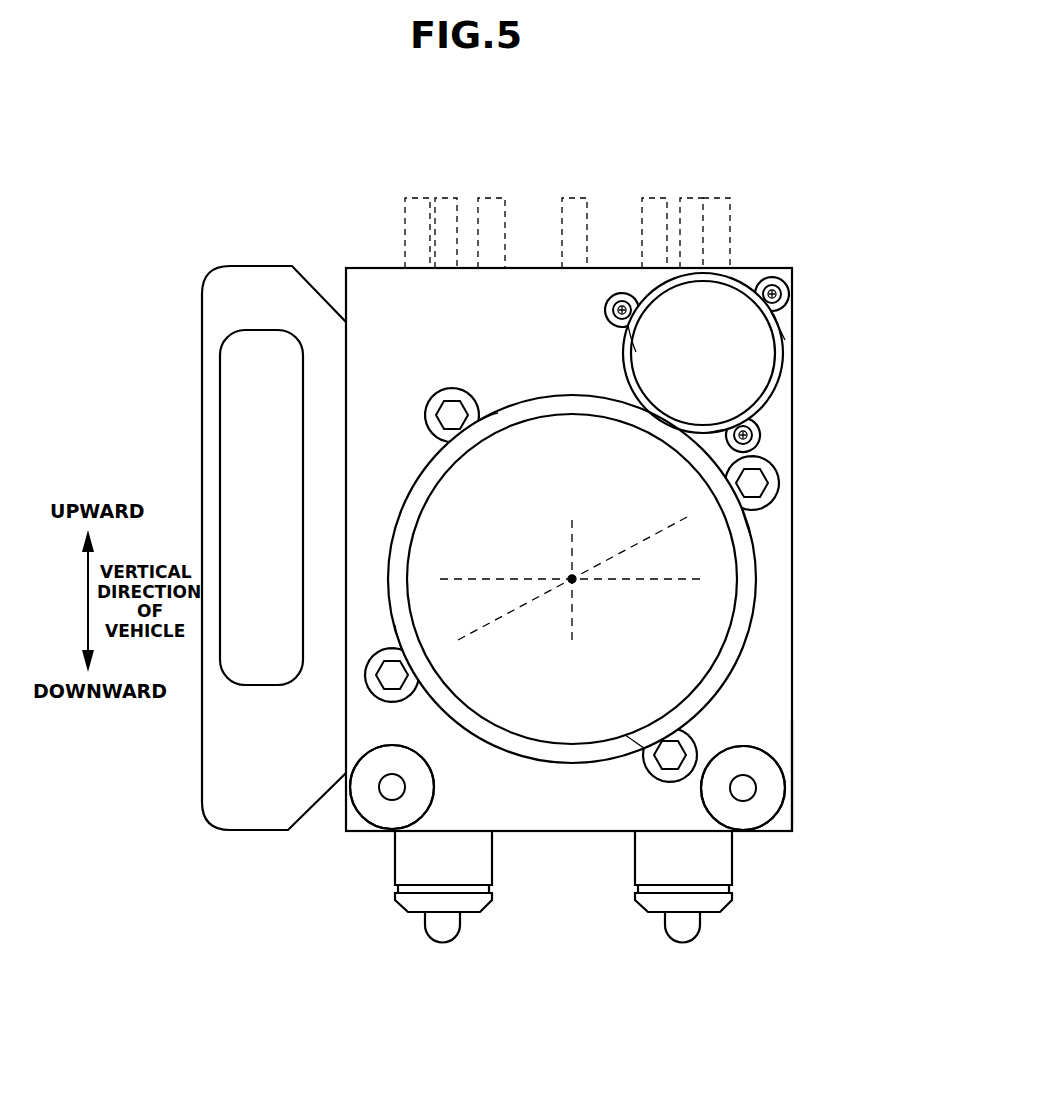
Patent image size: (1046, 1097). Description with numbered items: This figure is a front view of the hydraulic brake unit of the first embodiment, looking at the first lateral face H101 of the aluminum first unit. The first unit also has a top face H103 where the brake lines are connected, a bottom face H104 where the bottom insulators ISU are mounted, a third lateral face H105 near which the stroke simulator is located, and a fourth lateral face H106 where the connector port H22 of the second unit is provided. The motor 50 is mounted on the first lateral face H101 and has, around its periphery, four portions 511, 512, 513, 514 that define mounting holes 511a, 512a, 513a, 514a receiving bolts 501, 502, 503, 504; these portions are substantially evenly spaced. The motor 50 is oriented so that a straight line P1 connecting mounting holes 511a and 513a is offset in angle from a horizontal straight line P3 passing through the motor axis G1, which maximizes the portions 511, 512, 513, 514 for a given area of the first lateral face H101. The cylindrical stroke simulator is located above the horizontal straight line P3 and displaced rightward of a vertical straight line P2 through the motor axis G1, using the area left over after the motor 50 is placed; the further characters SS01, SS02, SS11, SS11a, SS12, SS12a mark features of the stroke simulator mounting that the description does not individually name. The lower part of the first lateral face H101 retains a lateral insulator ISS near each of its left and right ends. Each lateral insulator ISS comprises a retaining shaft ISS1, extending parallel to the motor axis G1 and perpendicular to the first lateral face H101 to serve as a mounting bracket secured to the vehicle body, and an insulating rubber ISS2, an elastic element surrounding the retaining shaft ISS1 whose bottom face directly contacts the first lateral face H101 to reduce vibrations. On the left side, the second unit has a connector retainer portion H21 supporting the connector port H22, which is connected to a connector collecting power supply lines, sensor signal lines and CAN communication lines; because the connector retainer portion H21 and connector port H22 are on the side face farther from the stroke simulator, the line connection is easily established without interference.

The first lateral face H101 is at (775, 575).
The fourth lateral face H106 is at (346, 270).
The top face H103 is at (612, 268).
The bottom face H104 is at (552, 833).
The third lateral face H105 is at (793, 785).
The connector retainer portion H21 is at (210, 795).
The connector port H22 is at (237, 450).
The motor 50 is at (452, 500).
The motor axis G1 is at (572, 579).
The straight line connecting mounting holes P1 is at (685, 522).
The vertical straight line P2 is at (575, 630).
The horizontal straight line P3 is at (665, 585).
The bolt 501 is at (770, 495).
The bolt 502 is at (653, 768).
The bolt 503 is at (388, 696).
The bolt 504 is at (436, 400).
The mounting portion 511 is at (772, 515).
The mounting hole 511a is at (770, 483).
The mounting portion 512 is at (690, 738).
The mounting hole 512a is at (700, 745).
The mounting portion 513 is at (384, 650).
The mounting hole 513a is at (372, 656).
The mounting portion 514 is at (452, 400).
The mounting hole 514a is at (490, 385).
The sensor screw SS01 is at (774, 286).
The sensor screw SS02 is at (613, 310).
The sensor mounting tab SS11 is at (783, 295).
The sensor tab edge SS11a is at (781, 316).
The sensor mounting tab SS12 is at (618, 326).
The sensor tab edge SS12a is at (614, 320).
The lateral insulator ISS is at (436, 759).
The retaining shaft ISS1 is at (397, 785).
The insulating rubber ISS2 is at (378, 800).
The bottom insulator ISU is at (393, 872).